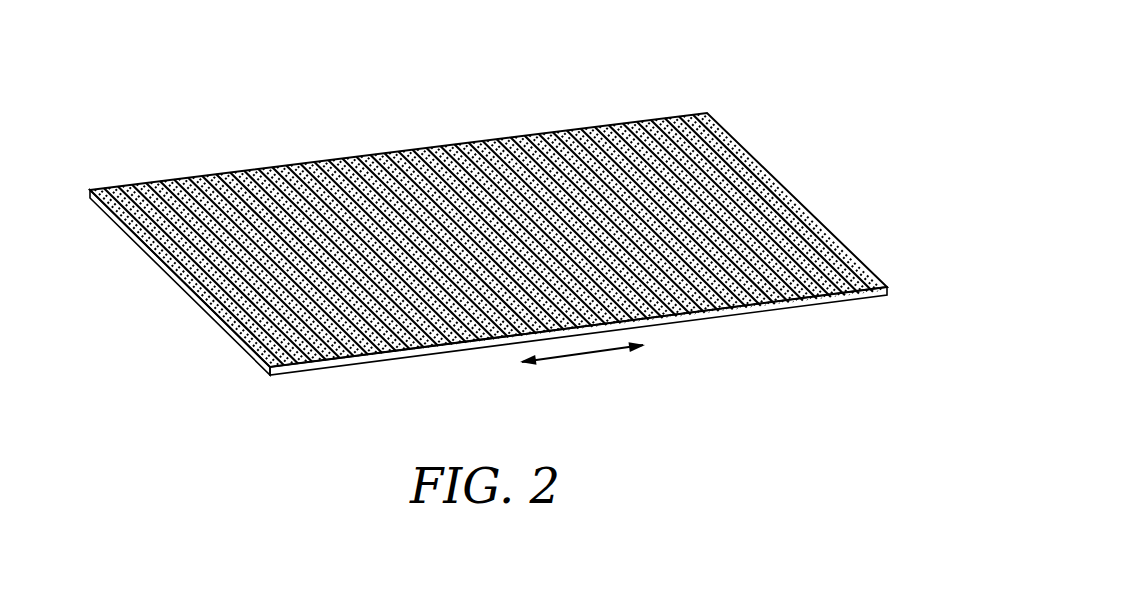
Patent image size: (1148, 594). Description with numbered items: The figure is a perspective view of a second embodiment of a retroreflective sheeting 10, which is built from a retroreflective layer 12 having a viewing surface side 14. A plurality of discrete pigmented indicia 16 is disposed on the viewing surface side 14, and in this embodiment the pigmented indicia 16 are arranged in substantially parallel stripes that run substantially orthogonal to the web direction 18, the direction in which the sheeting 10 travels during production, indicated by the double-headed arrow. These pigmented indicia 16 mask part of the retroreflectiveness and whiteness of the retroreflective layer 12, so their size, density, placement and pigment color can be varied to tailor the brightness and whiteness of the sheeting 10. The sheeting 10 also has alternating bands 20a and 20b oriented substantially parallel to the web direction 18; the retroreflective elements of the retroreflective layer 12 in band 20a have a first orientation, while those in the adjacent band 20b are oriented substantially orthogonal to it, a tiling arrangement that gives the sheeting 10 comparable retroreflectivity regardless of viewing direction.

The retroreflective sheeting 10 is at (680, 51).
The retroreflective layer 12 is at (773, 210).
The viewing surface side 14 is at (714, 163).
The pigmented indicia 16 is at (268, 197).
The web direction 18 is at (578, 353).
The band 20a is at (143, 205).
The band 20b is at (177, 238).